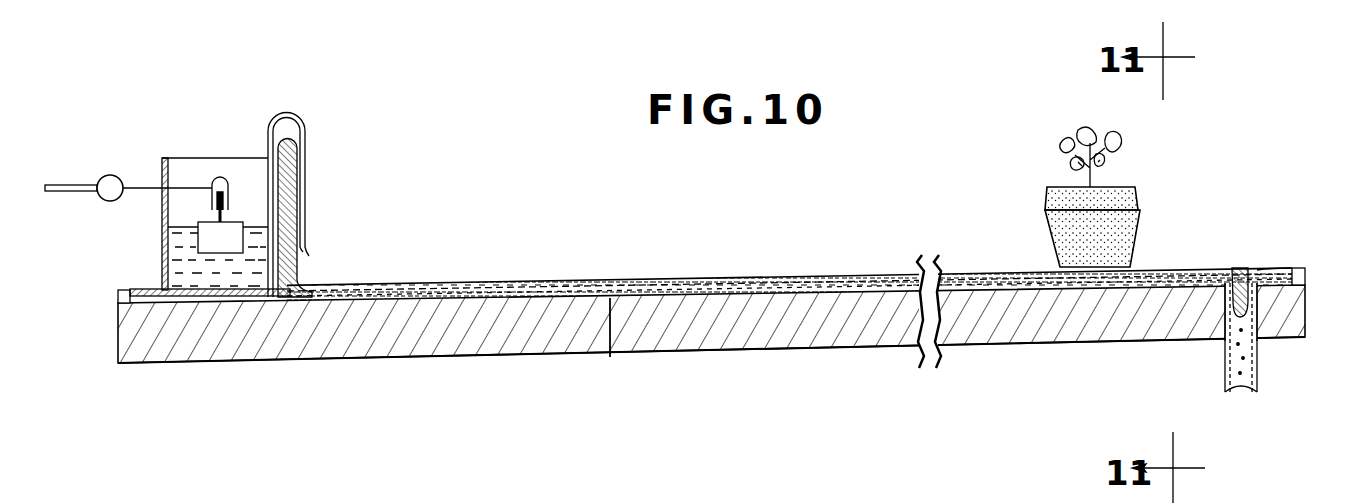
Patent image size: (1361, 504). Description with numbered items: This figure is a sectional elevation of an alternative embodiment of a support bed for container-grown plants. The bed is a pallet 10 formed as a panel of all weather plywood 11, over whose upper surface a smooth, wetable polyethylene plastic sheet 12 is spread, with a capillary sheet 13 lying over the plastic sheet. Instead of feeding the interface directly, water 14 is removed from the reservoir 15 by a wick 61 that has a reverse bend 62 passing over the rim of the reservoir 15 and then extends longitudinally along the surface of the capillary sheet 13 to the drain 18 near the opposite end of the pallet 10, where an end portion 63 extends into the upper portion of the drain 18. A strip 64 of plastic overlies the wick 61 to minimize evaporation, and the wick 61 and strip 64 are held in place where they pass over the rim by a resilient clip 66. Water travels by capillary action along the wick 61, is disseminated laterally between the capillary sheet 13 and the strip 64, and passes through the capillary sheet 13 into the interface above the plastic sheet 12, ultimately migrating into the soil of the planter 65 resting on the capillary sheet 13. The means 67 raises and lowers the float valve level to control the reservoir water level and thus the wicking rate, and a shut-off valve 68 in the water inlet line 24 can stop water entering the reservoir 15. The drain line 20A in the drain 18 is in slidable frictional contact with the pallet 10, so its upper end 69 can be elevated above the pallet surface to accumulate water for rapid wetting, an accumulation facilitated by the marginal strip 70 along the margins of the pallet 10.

The pallet 10 is at (405, 363).
The all weather plywood 11 is at (848, 342).
The polyethylene plastic sheet 12 is at (610, 357).
The capillary sheet 13 is at (580, 288).
The water 14 is at (196, 247).
The reservoir 15 is at (162, 213).
The drain 18 is at (1226, 300).
The drain line 20A is at (1258, 373).
The water inlet line 24 is at (73, 193).
The wick 61 is at (398, 287).
The reverse bend 62 is at (298, 147).
The end portion 63 is at (1248, 312).
The strip of plastic 64 is at (492, 282).
The planter 65 is at (1141, 227).
The resilient clip 66 is at (285, 112).
The means for raising and lowering the level of the float valve 67 is at (218, 176).
The shut-off valve 68 is at (110, 175).
The upper end 69 is at (1273, 284).
The marginal strip 70 is at (120, 294).